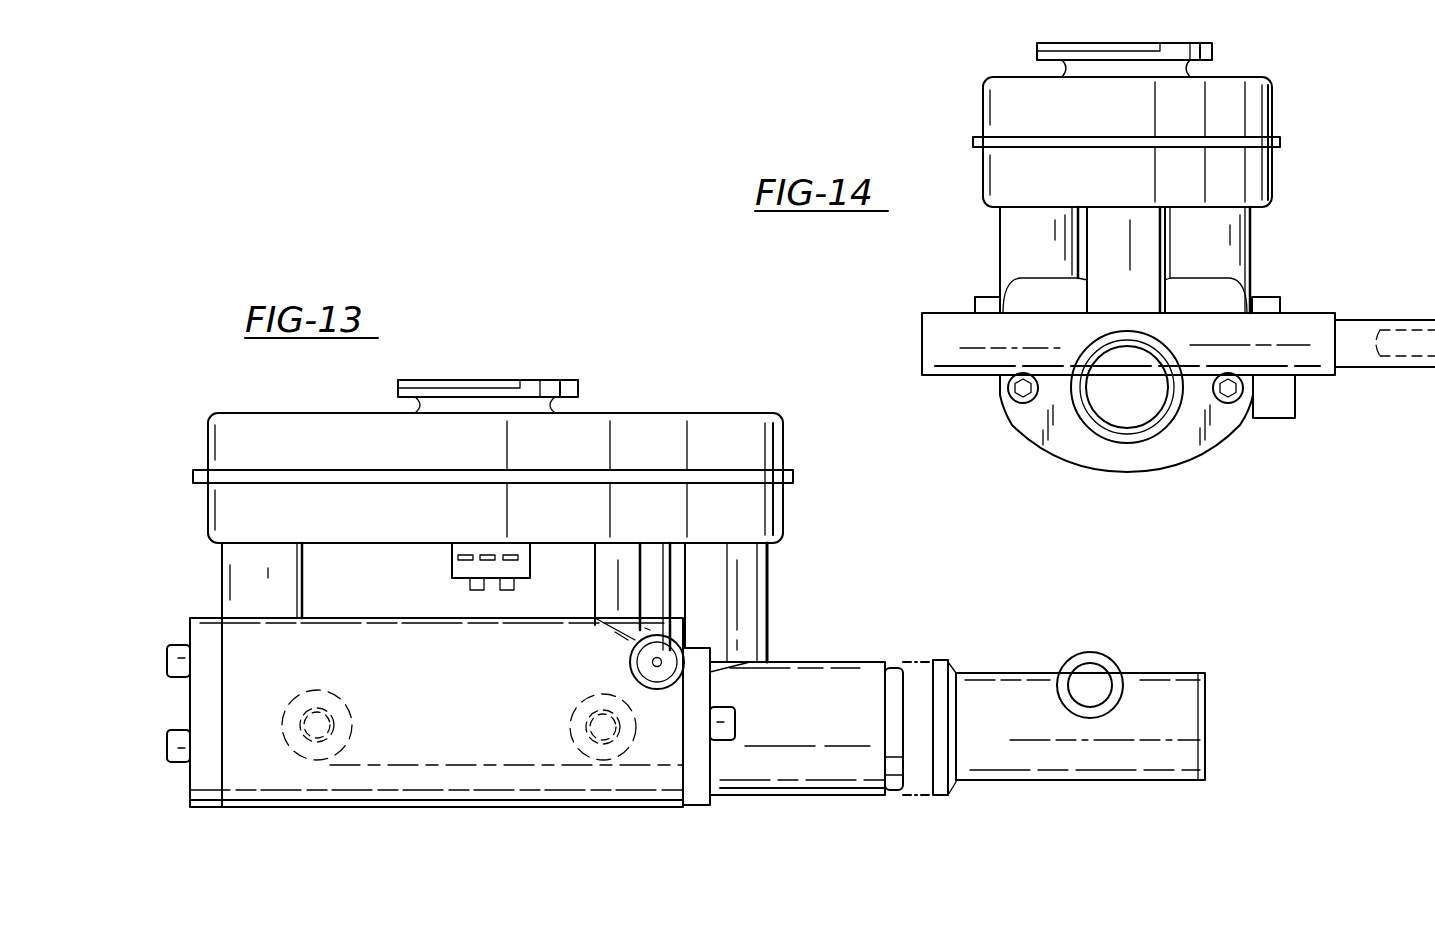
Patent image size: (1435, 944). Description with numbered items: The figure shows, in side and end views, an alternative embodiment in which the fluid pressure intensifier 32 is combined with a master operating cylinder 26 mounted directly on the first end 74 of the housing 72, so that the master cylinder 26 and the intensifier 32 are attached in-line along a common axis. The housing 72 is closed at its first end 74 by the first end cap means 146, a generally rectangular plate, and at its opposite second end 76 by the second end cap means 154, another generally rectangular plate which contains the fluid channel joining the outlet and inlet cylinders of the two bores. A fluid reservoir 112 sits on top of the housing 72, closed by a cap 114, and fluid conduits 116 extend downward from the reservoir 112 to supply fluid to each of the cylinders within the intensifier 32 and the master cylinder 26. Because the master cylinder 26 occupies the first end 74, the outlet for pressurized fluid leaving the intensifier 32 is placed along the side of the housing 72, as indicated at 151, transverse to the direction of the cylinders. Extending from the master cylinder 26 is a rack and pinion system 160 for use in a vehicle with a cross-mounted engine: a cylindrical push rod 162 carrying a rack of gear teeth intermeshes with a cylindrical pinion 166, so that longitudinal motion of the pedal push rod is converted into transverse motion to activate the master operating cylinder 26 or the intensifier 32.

In FIG. 13, the master operating cylinder 26 is at (850, 800).
In FIG. 13, the fluid pressure intensifier 32 is at (792, 588).
In FIG. 14, the fluid pressure intensifier 32 is at (1315, 190).
In FIG. 13, the housing 72 is at (490, 790).
In FIG. 13, the housing first end 74 is at (683, 778).
In FIG. 13, the housing second end 76 is at (222, 775).
In FIG. 13, the fluid reservoir 112 is at (783, 450).
In FIG. 14, the fluid reservoir 112 is at (1000, 93).
In FIG. 13, the reservoir cap 114 is at (560, 380).
In FIG. 13, the fluid conduits 116 is at (235, 580).
In FIG. 14, the fluid conduits 116 is at (1010, 246).
In FIG. 13, the first end cap means 146 is at (712, 800).
In FIG. 13, the outlet 151 is at (632, 660).
In FIG. 13, the second end cap means 154 is at (190, 770).
In FIG. 13, the rack and pinion system 160 is at (1112, 722).
In FIG. 14, the rack and pinion system 160 is at (1178, 419).
In FIG. 13, the cylindrical push rod 162 is at (1105, 675).
In FIG. 14, the cylindrical push rod 162 is at (1358, 358).
In FIG. 13, the cylindrical pinion 166 is at (1090, 760).
In FIG. 14, the cylindrical pinion 166 is at (1148, 405).